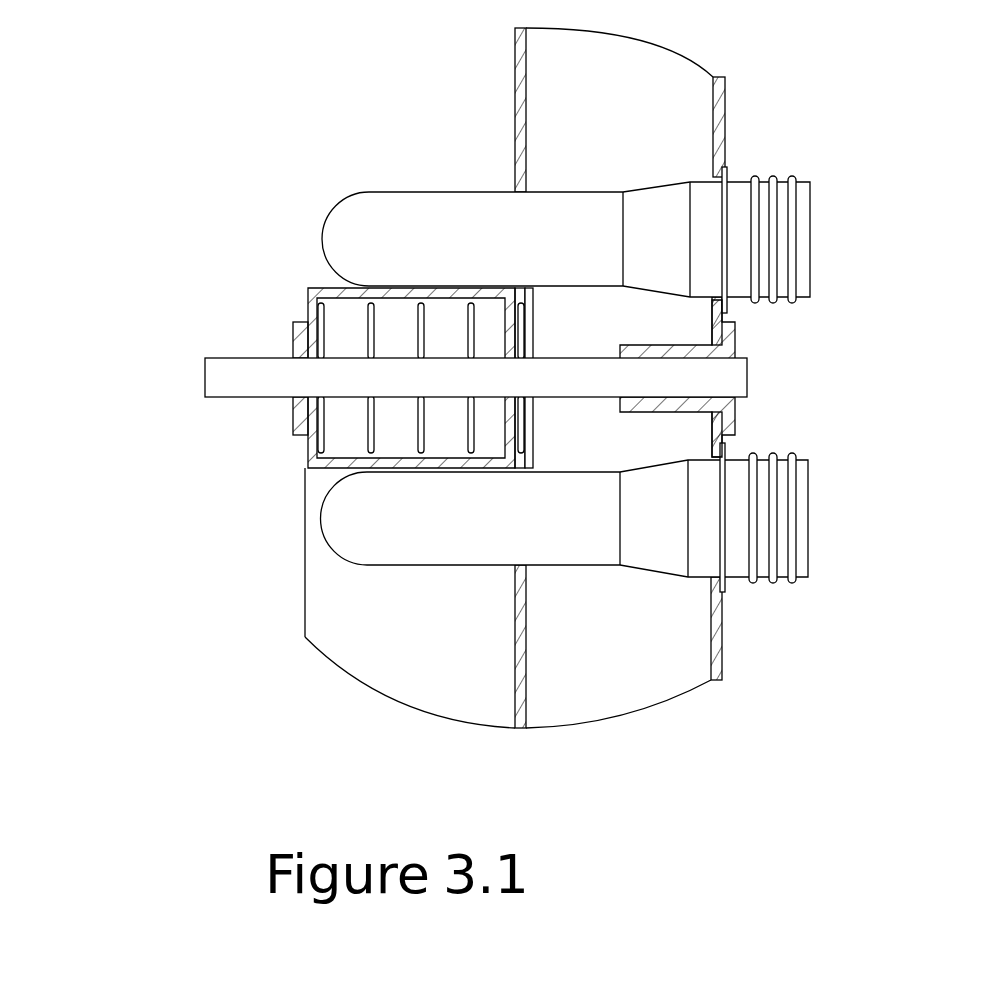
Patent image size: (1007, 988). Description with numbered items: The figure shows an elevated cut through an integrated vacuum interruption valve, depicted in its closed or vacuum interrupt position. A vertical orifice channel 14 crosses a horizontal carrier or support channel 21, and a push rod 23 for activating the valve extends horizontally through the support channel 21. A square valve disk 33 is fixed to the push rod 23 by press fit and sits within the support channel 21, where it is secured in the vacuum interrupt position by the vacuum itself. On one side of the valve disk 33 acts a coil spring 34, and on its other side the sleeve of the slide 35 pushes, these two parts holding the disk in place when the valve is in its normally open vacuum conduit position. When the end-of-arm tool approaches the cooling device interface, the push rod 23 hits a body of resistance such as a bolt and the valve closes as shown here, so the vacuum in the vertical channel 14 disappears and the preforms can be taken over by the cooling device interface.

The vertical orifice channel 14 is at (720, 137).
The horizontal carrier or support channel 21 is at (340, 463).
The push rod 23 is at (237, 377).
The valve disk 33 is at (540, 452).
The coil spring 34 is at (370, 328).
The sleeve of the slide 35 is at (735, 333).